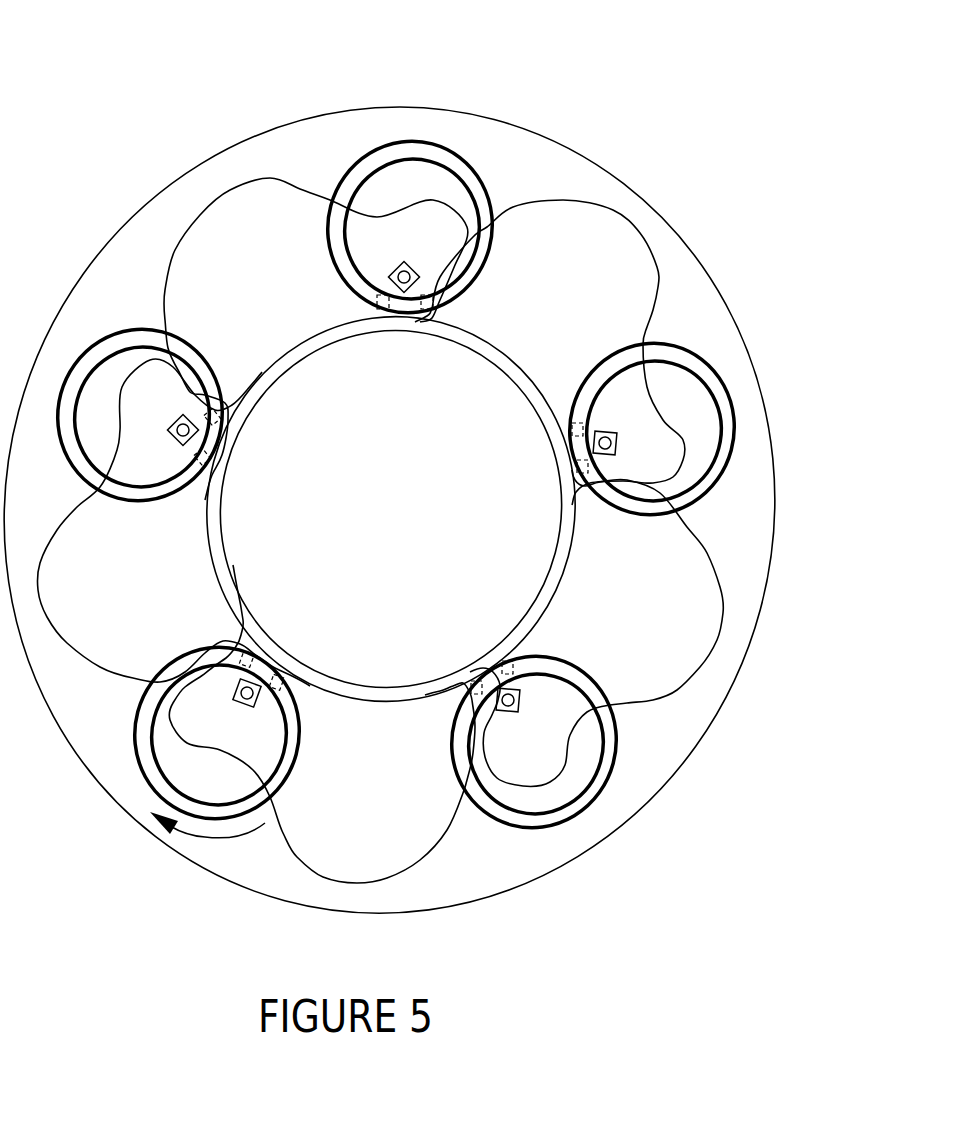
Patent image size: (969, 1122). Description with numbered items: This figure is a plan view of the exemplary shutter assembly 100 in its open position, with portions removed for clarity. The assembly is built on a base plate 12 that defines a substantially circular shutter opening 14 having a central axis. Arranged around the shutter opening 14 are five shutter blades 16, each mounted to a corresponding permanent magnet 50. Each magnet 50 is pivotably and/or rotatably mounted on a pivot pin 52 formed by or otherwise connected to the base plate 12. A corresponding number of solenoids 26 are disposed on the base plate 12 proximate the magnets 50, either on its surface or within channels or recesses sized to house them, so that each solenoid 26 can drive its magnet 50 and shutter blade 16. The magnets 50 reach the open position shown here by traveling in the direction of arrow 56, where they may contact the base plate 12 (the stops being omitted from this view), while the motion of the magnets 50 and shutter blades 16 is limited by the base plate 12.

The shutter assembly 100 is at (181, 130).
The base plate 12 is at (575, 148).
The shutter opening 14 is at (229, 574).
The shutter blade 16 is at (712, 558).
The solenoid 26 is at (617, 740).
The permanent magnet 50 is at (583, 802).
The pivot pin 52 is at (521, 709).
The arrow 56 is at (208, 838).